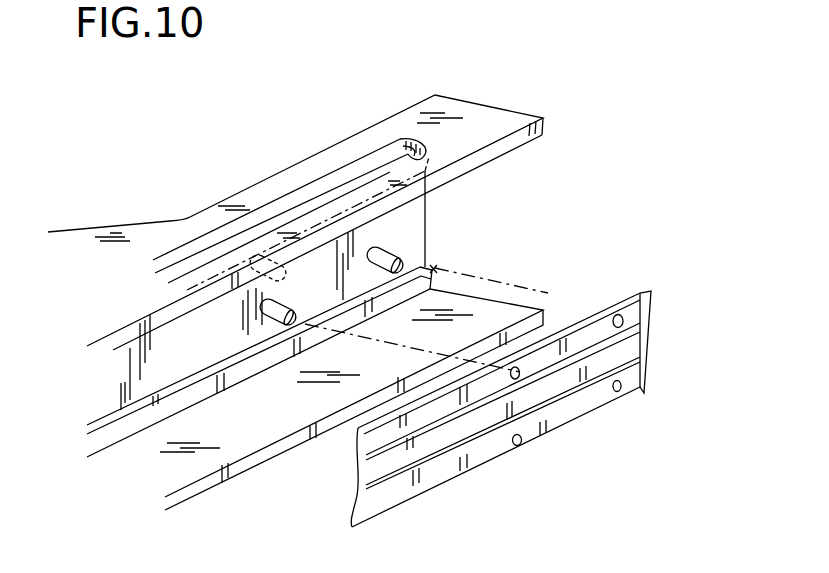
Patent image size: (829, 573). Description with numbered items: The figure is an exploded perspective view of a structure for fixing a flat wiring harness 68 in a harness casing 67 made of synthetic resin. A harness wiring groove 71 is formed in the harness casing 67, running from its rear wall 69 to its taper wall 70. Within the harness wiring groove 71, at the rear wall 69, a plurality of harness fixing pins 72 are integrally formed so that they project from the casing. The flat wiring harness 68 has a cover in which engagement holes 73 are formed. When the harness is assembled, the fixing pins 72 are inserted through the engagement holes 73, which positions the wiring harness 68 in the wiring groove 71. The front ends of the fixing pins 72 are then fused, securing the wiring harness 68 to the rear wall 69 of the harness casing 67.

The harness casing 67 is at (259, 156).
The flat wiring harness 68 is at (502, 377).
The rear wall 69 is at (434, 270).
The taper wall 70 is at (166, 219).
The harness wiring groove 71 is at (217, 343).
The harness fixing pins 72 is at (387, 260).
The engagement holes 73 is at (619, 314).